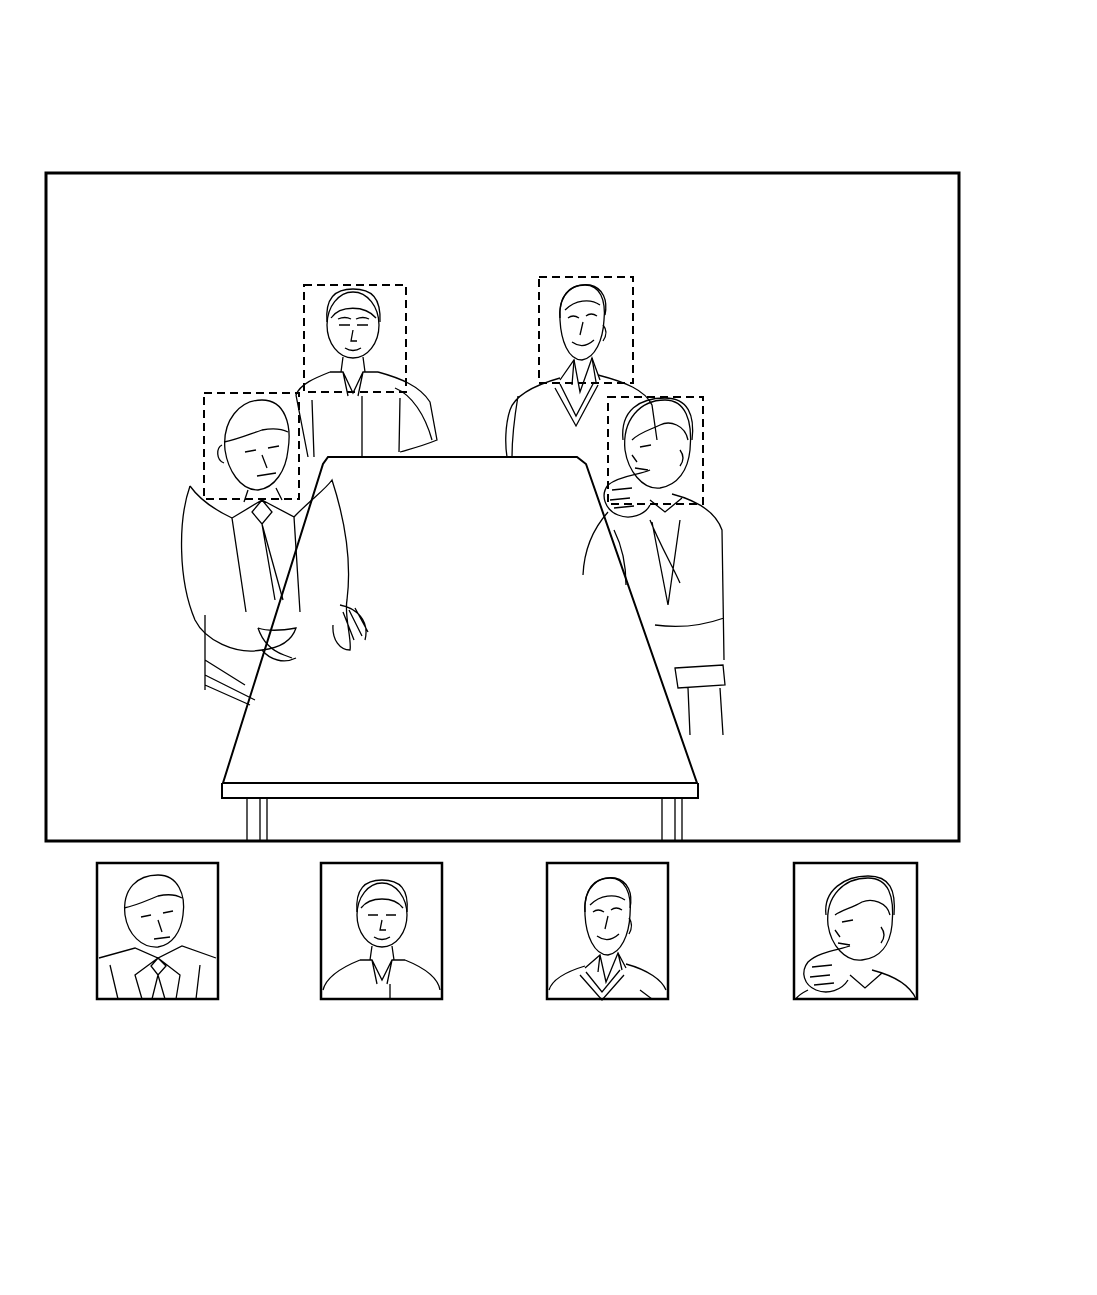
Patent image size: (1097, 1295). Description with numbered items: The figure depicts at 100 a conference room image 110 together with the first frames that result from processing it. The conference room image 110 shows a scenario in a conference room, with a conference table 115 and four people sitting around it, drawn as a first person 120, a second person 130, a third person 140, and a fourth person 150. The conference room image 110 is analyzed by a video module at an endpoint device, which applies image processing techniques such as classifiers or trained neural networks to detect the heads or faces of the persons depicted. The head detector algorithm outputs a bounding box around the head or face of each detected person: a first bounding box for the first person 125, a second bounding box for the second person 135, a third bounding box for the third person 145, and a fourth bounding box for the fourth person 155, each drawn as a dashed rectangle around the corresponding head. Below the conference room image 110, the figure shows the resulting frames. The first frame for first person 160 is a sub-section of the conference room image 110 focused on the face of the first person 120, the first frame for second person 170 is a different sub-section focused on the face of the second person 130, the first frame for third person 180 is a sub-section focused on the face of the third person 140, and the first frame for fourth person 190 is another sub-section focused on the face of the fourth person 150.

The conference room image scenario 100 is at (838, 64).
The conference room image 110 is at (326, 173).
The conference table 115 is at (487, 457).
The first person 120 is at (257, 393).
The first bounding box for the first person 125 is at (204, 435).
The second person 130 is at (351, 285).
The second bounding box for the second person 135 is at (383, 285).
The third person 140 is at (605, 305).
The third bounding box for the third person 145 is at (633, 288).
The fourth person 150 is at (690, 438).
The fourth bounding box for the fourth person 155 is at (703, 462).
The first frame for first person 160 is at (148, 999).
The first frame for second person 170 is at (383, 999).
The first frame for third person 180 is at (607, 999).
The first frame for fourth person 190 is at (853, 999).